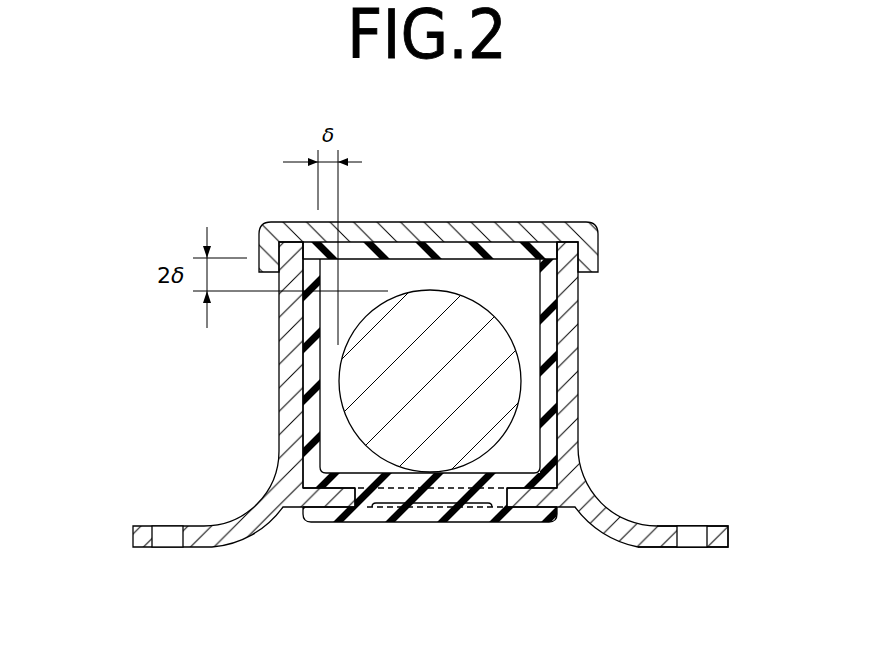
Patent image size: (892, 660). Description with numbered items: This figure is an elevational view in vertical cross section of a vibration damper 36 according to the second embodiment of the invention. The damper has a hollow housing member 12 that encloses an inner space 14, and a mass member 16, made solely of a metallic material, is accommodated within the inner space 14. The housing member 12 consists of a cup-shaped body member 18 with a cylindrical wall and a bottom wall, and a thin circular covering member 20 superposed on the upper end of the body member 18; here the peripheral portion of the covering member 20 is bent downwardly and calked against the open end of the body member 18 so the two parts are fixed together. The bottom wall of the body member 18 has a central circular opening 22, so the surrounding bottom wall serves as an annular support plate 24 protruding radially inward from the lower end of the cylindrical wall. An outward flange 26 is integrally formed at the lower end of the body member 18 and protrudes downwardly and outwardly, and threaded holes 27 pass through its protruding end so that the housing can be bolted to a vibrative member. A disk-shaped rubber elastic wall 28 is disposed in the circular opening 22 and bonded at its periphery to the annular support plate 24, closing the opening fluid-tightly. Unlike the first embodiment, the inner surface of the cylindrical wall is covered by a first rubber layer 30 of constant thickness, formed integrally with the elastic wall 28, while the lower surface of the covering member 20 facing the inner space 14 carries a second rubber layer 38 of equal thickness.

The housing member 12 is at (258, 335).
The inner space 14 is at (520, 297).
The mass member 16 is at (367, 413).
The body member 18 is at (568, 360).
The covering member 20 is at (487, 232).
The circular opening 22 is at (492, 505).
The annular support plate 24 is at (510, 493).
The outward flange 26 is at (657, 537).
The threaded holes 27 is at (162, 540).
The elastic wall 28 is at (397, 492).
The first rubber layer 30 is at (305, 367).
The vibration damper 36 is at (624, 206).
The second rubber layer 38 is at (402, 245).